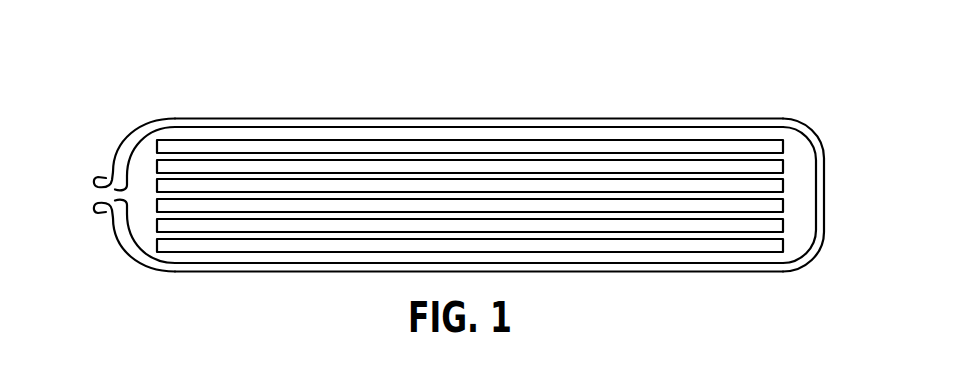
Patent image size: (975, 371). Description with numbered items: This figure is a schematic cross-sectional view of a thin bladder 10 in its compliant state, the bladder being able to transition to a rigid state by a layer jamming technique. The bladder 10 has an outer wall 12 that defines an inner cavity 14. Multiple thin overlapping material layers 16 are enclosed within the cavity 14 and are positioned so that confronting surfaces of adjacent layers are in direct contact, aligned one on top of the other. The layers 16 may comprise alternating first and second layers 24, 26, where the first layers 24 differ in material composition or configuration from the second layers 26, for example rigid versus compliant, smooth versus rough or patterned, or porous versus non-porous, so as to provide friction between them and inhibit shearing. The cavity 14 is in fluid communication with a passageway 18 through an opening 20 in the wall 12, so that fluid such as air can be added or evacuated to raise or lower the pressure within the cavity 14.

The bladder 10 is at (589, 100).
The outer wall 12 is at (278, 118).
The inner cavity 14 is at (795, 158).
The material layers 16 is at (150, 148).
The passageway 18 is at (105, 194).
The opening 20 is at (155, 224).
The first layers 24 is at (784, 183).
The second layers 26 is at (786, 207).